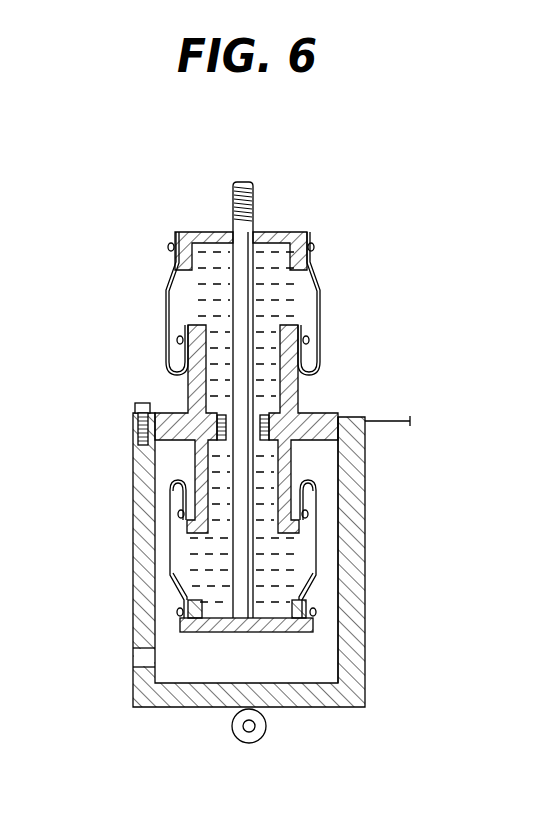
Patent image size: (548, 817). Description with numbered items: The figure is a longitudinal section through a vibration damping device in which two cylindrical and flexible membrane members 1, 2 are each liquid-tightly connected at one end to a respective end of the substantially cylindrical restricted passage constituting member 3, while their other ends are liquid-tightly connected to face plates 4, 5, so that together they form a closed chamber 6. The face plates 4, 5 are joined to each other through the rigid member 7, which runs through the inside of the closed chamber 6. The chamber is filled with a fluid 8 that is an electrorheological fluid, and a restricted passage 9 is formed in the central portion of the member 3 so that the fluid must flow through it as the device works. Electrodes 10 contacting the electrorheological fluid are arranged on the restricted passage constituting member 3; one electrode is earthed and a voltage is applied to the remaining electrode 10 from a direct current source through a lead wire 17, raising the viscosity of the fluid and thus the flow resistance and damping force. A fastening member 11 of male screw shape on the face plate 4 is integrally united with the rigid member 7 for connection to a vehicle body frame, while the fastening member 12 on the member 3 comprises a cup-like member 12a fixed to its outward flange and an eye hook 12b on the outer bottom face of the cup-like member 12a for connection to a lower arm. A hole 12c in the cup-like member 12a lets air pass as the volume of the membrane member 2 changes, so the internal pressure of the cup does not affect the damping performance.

The cylindrical and flexible membrane member 1 is at (255, 410).
The cylindrical and flexible membrane member 2 is at (160, 546).
The restricted passage constituting member 3 is at (310, 395).
The face plate 4 is at (292, 232).
The face plate 5 is at (278, 634).
The closed chamber 6 is at (212, 299).
The rigid member 7 is at (242, 462).
The fluid 8 is at (176, 300).
The restricted passage 9 is at (264, 440).
The electrode 10 is at (231, 404).
The fastening member 11 is at (255, 198).
The fastening member 12 is at (245, 588).
The cup-like member 12a is at (356, 608).
The eye hook 12b is at (266, 729).
The hole 12c is at (132, 656).
The lead wire 17 is at (397, 420).